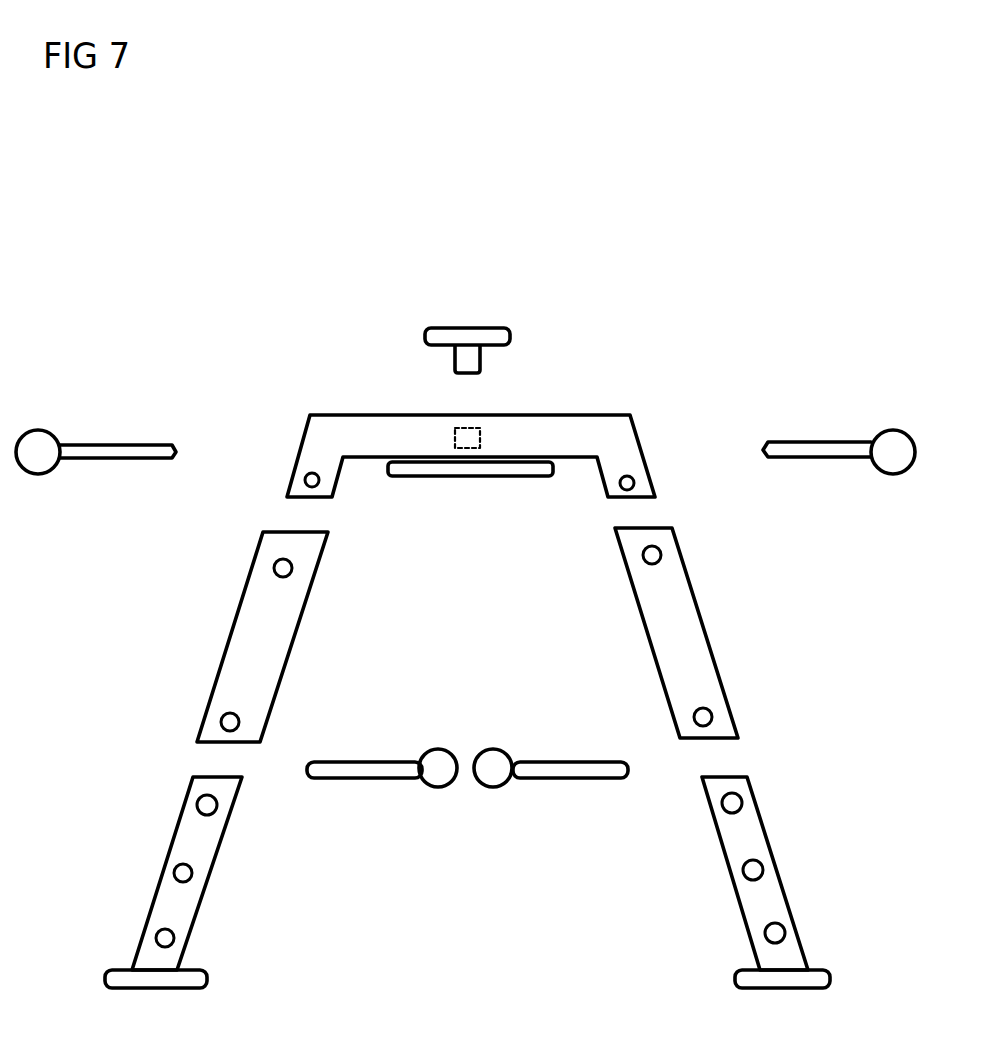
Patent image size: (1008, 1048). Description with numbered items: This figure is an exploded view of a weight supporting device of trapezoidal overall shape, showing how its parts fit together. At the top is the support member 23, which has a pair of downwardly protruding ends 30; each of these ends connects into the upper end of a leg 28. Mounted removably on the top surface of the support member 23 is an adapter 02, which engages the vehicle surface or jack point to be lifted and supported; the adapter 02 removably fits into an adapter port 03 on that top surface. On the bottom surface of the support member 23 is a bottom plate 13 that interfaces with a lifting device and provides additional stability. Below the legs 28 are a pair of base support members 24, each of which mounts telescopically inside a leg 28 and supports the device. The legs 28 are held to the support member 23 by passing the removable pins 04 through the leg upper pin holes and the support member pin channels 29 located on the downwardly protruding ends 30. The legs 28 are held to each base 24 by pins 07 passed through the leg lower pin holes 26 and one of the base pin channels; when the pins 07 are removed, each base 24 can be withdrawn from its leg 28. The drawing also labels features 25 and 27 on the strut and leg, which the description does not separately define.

The adapter 02 is at (478, 323).
The adapter port 03 is at (469, 433).
The removable pins 04 is at (152, 448).
The pins 07 is at (570, 778).
The bottom plate 13 is at (497, 480).
The support member 23 is at (381, 415).
The base support member 24 is at (152, 888).
The upper strut hole 25 is at (272, 565).
The leg lower pin holes 26 is at (224, 717).
The right leg 27 is at (778, 923).
The leg 28 is at (296, 660).
The support member pin channels 29 is at (311, 472).
The downwardly protruding ends 30 is at (655, 455).